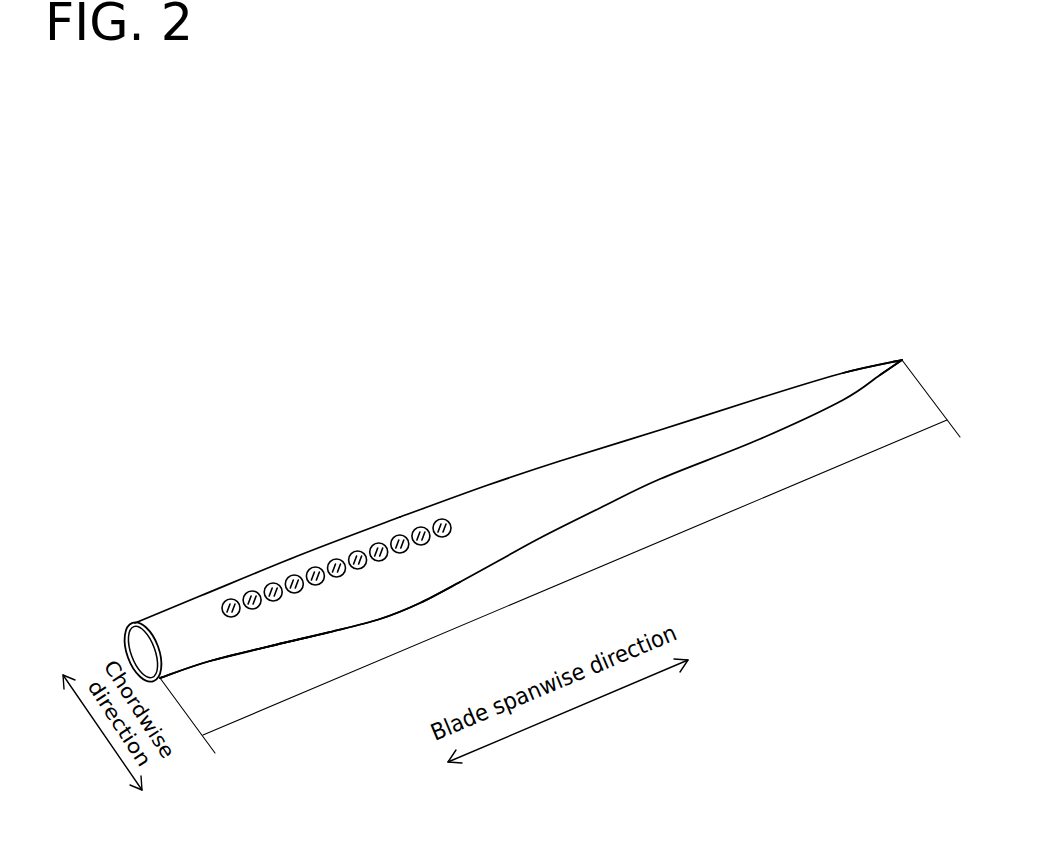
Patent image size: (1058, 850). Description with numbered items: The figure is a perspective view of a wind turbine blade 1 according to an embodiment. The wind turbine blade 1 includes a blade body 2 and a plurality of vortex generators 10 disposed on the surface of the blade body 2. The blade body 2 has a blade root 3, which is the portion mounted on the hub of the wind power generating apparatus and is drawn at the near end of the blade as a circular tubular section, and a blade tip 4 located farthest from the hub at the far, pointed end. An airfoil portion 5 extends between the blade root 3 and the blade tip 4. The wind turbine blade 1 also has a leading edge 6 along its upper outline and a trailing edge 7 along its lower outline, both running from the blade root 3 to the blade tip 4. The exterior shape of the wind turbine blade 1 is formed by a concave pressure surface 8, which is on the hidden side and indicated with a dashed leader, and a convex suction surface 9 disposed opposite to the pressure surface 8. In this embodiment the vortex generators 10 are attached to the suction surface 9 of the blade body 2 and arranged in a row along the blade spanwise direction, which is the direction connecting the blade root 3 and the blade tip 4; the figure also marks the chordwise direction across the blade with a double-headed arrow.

The wind turbine blade 1 is at (275, 445).
The blade body 2 is at (548, 462).
The blade root 3 is at (135, 632).
The blade tip 4 is at (902, 358).
The airfoil portion 5 is at (337, 543).
The leading edge 6 is at (488, 485).
The trailing edge 7 is at (540, 538).
The pressure surface 8 is at (220, 632).
The suction surface 9 is at (257, 620).
The vortex generators 10 is at (421, 527).